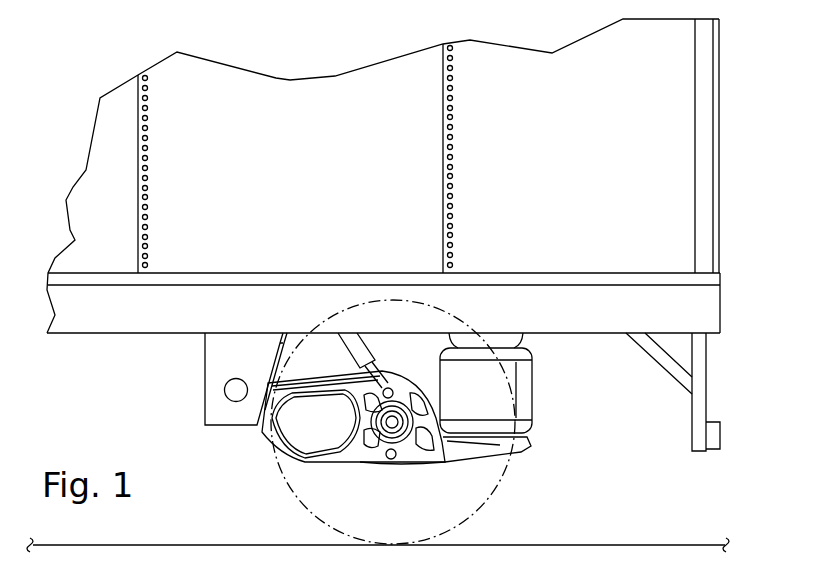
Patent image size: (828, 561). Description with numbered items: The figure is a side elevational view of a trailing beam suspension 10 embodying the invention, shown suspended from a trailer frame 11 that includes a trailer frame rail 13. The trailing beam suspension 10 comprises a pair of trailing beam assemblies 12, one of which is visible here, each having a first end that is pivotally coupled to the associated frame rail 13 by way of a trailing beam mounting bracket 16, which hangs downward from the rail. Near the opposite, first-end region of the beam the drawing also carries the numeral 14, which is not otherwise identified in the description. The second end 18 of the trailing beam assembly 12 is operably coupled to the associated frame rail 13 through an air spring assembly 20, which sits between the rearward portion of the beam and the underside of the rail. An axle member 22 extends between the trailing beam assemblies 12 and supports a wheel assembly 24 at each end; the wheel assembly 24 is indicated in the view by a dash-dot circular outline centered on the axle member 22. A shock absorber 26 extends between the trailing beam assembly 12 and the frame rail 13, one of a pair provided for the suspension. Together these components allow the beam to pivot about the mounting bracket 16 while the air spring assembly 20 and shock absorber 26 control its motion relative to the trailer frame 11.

The trailing beam suspension 10 is at (416, 442).
The trailer frame 11 is at (724, 313).
The trailing beam assembly 12 is at (375, 442).
The trailer frame rail 13 is at (606, 335).
The pivot bushing 14 is at (268, 437).
The trailing beam mounting bracket 16 is at (205, 402).
The second end 18 is at (500, 448).
The air spring assembly 20 is at (532, 383).
The axle member 22 is at (386, 441).
The wheel assembly 24 is at (480, 511).
The shock absorber 26 is at (363, 345).